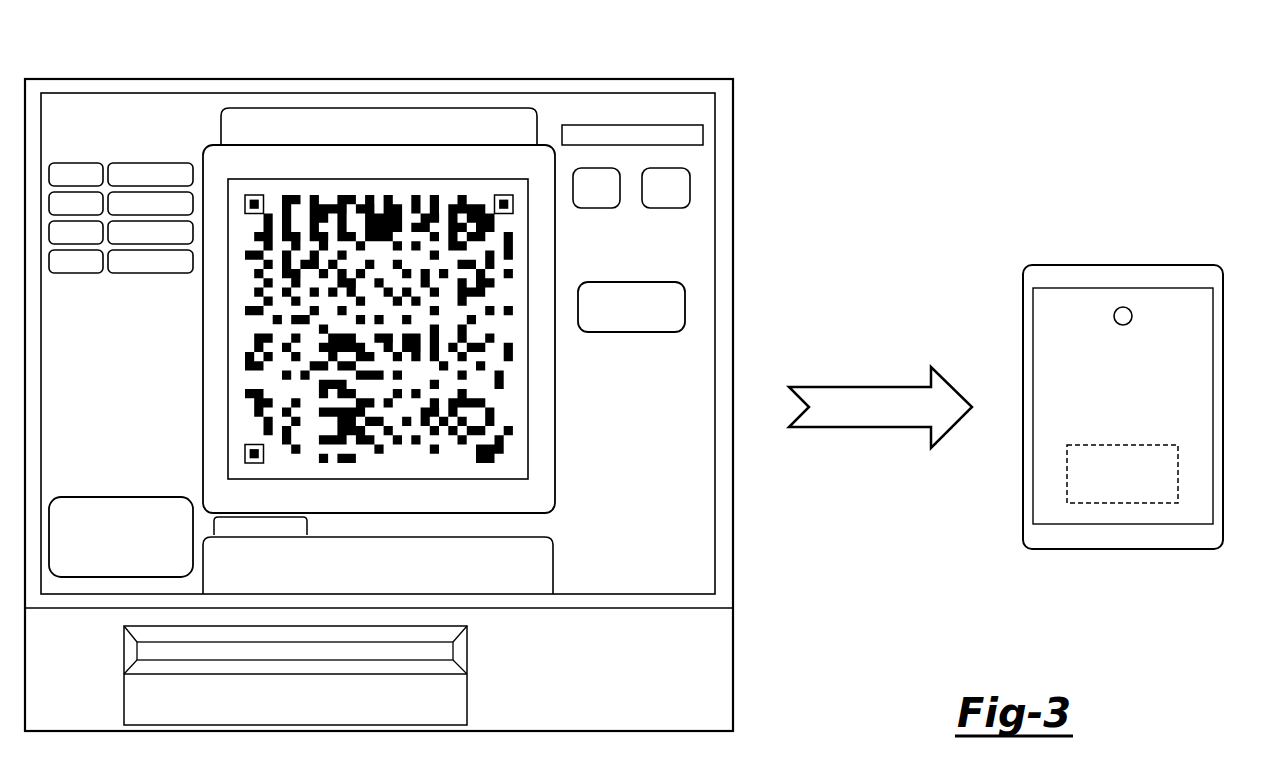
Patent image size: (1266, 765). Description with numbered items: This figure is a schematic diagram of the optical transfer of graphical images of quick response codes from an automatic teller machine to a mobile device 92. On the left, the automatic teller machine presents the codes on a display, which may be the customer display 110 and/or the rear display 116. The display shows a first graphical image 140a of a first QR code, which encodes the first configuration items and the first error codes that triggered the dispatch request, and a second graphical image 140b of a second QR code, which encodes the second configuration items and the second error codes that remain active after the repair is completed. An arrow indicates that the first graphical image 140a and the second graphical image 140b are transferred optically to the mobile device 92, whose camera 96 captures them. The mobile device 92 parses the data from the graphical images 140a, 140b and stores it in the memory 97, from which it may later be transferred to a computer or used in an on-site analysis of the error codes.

The customer display 110 is at (458, 381).
The rear display 116 is at (458, 381).
The first graphical image 140a is at (403, 255).
The second graphical image 140b is at (475, 207).
The mobile device 92 is at (1089, 371).
The camera 96 is at (1133, 315).
The memory 97 is at (1075, 485).